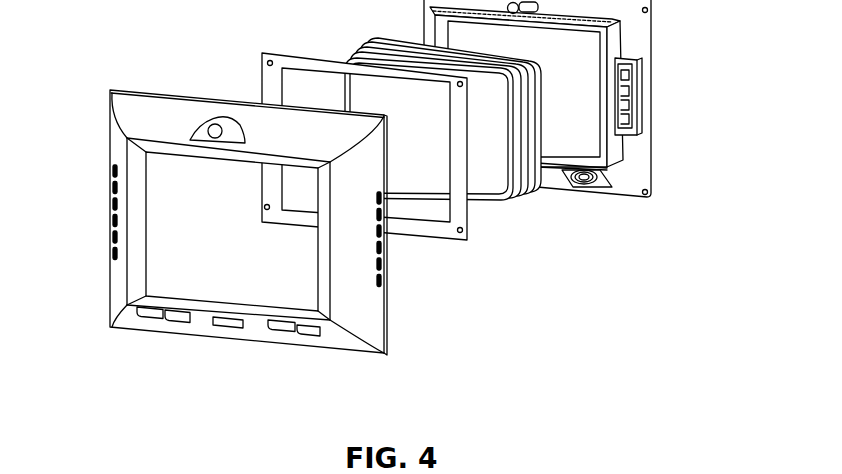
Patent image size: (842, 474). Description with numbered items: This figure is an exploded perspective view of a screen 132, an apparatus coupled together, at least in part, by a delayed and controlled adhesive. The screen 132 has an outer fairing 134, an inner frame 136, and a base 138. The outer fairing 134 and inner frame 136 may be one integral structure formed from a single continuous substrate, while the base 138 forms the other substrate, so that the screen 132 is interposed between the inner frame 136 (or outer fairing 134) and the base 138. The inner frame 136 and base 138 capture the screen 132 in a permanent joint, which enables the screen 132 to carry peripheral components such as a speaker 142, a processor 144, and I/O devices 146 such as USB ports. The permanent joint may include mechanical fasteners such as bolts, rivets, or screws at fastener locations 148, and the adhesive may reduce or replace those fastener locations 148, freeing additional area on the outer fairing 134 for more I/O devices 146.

The screen 132 is at (488, 172).
The outer fairing 134 is at (386, 353).
The inner frame 136 is at (450, 236).
The base 138 is at (645, 163).
The speaker 142 is at (583, 183).
The processor 144 is at (627, 90).
The I/O devices 146 is at (110, 203).
The fastener locations 148 is at (264, 208).